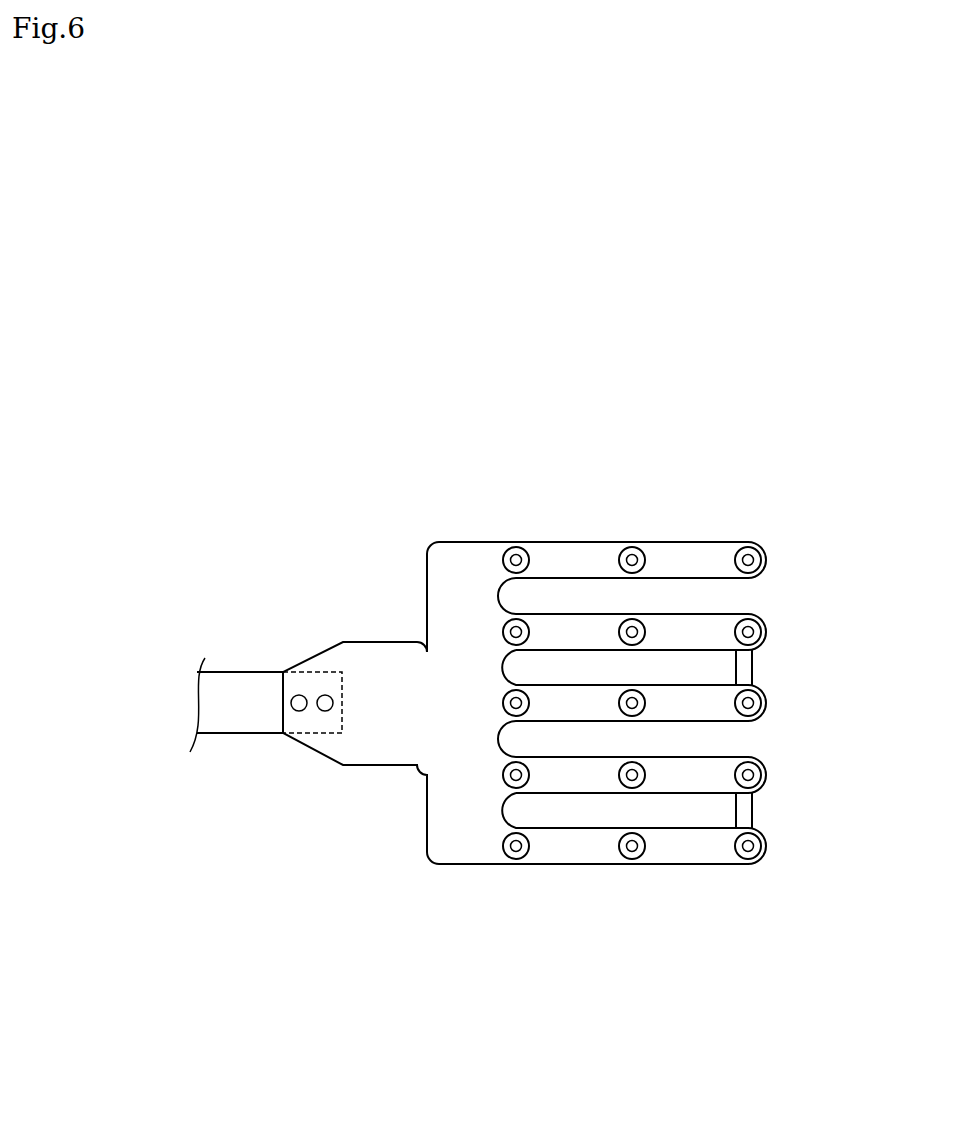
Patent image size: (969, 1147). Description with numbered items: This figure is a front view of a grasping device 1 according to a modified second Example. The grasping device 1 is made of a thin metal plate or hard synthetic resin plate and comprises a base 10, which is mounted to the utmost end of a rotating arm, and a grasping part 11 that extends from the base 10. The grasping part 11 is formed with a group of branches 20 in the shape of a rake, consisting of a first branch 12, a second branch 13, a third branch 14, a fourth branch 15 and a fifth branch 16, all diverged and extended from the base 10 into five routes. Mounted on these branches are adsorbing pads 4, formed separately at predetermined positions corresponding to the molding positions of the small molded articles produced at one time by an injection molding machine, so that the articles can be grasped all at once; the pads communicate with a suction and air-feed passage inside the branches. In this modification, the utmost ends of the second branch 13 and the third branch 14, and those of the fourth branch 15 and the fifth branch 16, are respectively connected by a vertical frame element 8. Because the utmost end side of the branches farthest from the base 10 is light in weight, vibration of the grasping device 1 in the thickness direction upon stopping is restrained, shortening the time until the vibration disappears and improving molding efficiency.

The grasping device 1 is at (549, 536).
The adsorbing pads 4 is at (517, 548).
The vertical frame element 8 is at (745, 665).
The base 10 is at (358, 755).
The grasping part 11 is at (660, 535).
The first branch 12 is at (727, 542).
The second branch 13 is at (725, 613).
The third branch 14 is at (768, 700).
The fourth branch 15 is at (722, 757).
The fifth branch 16 is at (708, 867).
The group of branches 20 is at (783, 638).